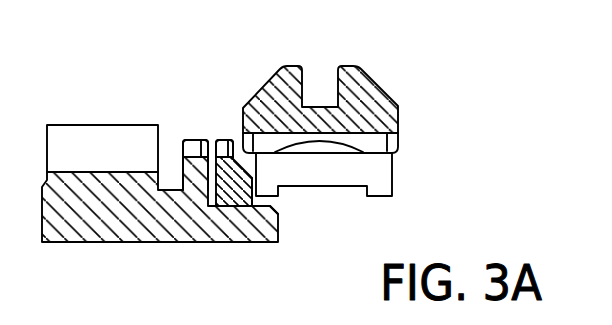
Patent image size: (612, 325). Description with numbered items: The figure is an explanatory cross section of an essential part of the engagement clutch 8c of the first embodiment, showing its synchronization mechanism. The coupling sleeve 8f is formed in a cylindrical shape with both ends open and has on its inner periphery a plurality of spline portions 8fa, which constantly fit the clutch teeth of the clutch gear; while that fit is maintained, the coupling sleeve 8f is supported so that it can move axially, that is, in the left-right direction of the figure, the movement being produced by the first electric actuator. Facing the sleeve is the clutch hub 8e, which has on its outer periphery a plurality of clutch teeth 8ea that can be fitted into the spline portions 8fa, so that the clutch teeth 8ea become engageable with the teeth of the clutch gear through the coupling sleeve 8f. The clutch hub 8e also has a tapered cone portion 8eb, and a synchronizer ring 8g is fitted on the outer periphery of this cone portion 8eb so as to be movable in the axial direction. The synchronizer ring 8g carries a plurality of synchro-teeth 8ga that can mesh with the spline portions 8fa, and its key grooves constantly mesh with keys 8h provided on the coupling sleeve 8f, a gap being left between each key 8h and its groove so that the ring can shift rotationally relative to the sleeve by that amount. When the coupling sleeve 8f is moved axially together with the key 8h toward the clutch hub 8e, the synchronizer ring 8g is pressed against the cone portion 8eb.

The engagement clutch 8c is at (259, 73).
The clutch hub 8e is at (182, 168).
The clutch teeth 8ea is at (195, 139).
The cone portion 8eb is at (278, 213).
The coupling sleeve 8f is at (373, 101).
The spline portions 8fa is at (378, 142).
The synchronizer ring 8g is at (250, 203).
The synchro-teeth 8ga is at (221, 139).
The key 8h is at (376, 172).